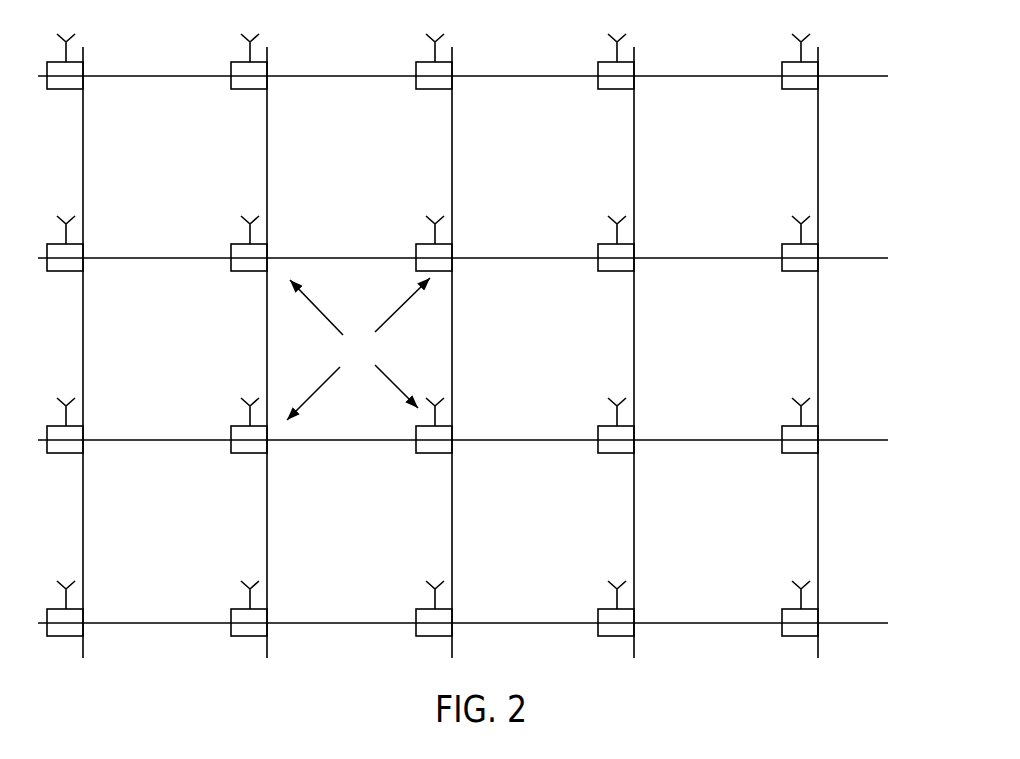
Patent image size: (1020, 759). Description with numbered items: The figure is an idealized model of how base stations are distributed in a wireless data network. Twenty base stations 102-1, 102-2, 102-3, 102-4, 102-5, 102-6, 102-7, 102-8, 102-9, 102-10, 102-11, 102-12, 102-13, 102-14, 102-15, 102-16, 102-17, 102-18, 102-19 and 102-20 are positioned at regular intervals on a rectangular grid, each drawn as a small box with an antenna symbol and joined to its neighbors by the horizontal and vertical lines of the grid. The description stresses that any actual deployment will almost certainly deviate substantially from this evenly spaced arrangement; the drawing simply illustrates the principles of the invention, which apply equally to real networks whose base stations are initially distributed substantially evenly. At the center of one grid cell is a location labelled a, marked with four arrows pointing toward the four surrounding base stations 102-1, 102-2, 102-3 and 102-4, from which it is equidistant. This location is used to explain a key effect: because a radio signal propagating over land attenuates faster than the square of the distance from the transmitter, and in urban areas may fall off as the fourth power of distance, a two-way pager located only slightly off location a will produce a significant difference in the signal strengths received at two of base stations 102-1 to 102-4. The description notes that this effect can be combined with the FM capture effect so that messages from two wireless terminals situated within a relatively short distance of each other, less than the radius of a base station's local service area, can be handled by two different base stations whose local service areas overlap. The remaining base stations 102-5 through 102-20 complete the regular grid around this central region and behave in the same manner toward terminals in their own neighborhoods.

The base station 102-1 is at (444, 263).
The base station 102-2 is at (444, 445).
The base station 102-3 is at (259, 445).
The base station 102-4 is at (262, 253).
The base station 102-5 is at (259, 81).
The base station 102-6 is at (444, 81).
The base station 102-7 is at (626, 81).
The base station 102-8 is at (626, 263).
The base station 102-9 is at (626, 445).
The base station 102-10 is at (626, 628).
The base station 102-11 is at (444, 628).
The base station 102-12 is at (259, 628).
The base station 102-13 is at (75, 628).
The base station 102-14 is at (75, 445).
The base station 102-15 is at (75, 263).
The base station 102-16 is at (75, 81).
The base station 102-17 is at (810, 79).
The base station 102-18 is at (810, 261).
The base station 102-19 is at (810, 443).
The base station 102-20 is at (810, 626).
The location a is at (358, 349).